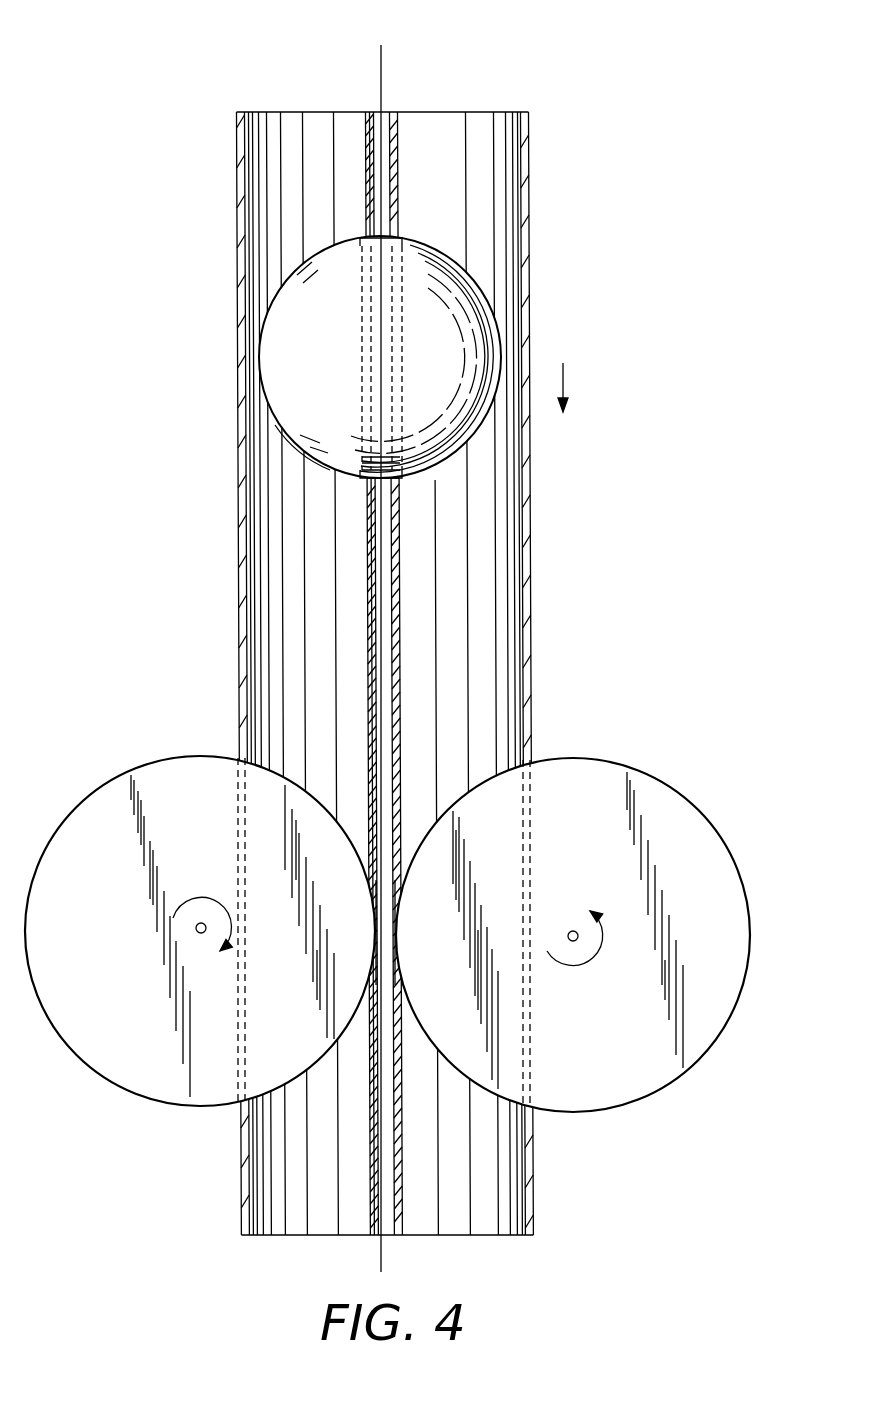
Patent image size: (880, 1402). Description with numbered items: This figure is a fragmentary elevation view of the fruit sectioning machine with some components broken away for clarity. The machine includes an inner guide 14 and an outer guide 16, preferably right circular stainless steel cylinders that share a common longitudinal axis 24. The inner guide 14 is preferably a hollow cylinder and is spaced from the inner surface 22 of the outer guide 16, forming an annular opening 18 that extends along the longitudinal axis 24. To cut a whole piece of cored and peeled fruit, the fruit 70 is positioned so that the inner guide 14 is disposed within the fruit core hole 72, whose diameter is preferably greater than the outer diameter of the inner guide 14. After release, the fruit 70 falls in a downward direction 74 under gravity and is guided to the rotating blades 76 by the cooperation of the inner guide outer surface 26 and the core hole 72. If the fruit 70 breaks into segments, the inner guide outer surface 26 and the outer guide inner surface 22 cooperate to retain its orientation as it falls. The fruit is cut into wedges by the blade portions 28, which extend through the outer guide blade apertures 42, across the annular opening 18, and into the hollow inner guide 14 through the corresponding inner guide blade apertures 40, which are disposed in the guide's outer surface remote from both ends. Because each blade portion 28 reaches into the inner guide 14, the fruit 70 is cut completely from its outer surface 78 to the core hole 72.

The inner guide 14 is at (411, 651).
The outer guide 16 is at (527, 176).
The annular opening 18 is at (405, 641).
The inner surface 22 is at (260, 112).
The longitudinal axis 24 is at (383, 50).
The inner guide outer surface 26 is at (397, 157).
The blade portions 28 is at (290, 782).
The inner guide blade apertures 40 is at (403, 858).
The outer guide blade apertures 42 is at (533, 756).
The fruit 70 is at (380, 356).
The core hole 72 is at (398, 240).
The downward direction 74 is at (581, 387).
The rotating blades 76 is at (200, 891).
The outer surface 78 is at (292, 452).